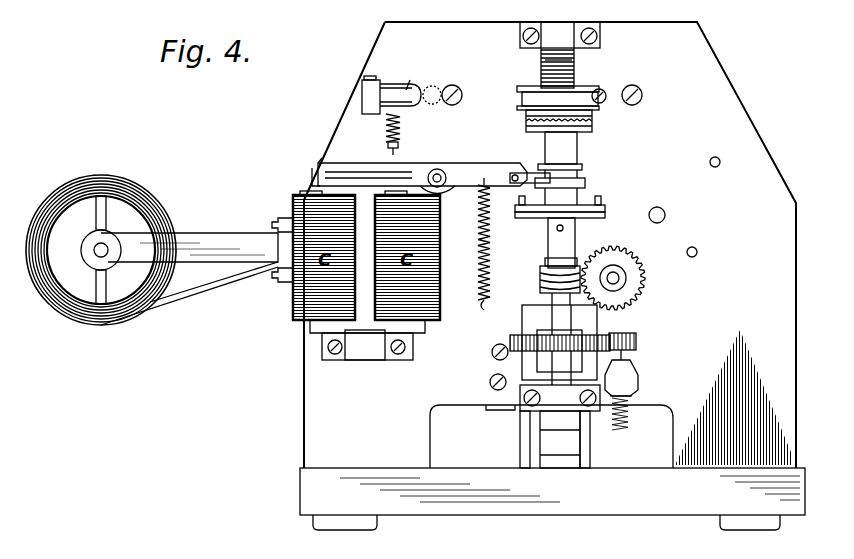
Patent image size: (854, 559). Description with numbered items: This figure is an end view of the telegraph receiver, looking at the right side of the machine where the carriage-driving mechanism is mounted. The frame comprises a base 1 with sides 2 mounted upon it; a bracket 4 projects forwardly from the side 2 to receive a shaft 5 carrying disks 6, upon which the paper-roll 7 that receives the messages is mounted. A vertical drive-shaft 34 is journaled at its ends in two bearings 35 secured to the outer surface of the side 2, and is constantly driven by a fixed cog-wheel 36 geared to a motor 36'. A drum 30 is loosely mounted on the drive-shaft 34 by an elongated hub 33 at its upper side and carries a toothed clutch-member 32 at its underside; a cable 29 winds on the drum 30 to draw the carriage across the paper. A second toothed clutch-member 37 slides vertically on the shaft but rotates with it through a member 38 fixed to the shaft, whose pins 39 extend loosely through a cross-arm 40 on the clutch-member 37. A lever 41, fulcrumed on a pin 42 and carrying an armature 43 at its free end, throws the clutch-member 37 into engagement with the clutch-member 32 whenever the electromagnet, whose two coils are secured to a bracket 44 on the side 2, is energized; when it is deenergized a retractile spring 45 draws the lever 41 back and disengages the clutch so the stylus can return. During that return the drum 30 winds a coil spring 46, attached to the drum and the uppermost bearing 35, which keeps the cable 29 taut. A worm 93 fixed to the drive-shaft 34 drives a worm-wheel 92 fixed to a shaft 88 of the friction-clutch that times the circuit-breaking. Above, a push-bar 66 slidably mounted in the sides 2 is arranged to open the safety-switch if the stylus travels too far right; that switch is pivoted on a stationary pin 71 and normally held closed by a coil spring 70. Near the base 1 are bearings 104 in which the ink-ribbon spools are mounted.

The base 1 is at (592, 518).
The sides 2 is at (304, 430).
The brackets 4 is at (212, 236).
The shaft 5 is at (92, 250).
The disks 6 is at (68, 298).
The paper-roll 7 is at (100, 326).
The cable 29 is at (604, 102).
The drum 30 is at (520, 88).
The toothed clutch-member 32 is at (526, 118).
The elongated hub 33 is at (546, 60).
The vertical drive-shaft 34 is at (576, 246).
The bearings 35 is at (560, 25).
The fixed cog-wheel 36 is at (535, 349).
The motor 36' is at (644, 381).
The toothed clutch-member 37 is at (584, 130).
The member 38 is at (538, 219).
The pins 39 is at (606, 208).
The cross-arm 40 is at (590, 190).
The lever 41 is at (478, 160).
The pin 42 is at (437, 169).
The armature 43 is at (312, 178).
The bracket 44 is at (368, 358).
The retractile spring 45 is at (478, 255).
The coil spring 46 is at (576, 60).
The push-bar 66 is at (432, 86).
The coil spring 70 is at (386, 128).
The stationary pin 71 is at (362, 155).
The shaft 88 is at (638, 288).
The worm-wheel 92 is at (645, 276).
The worm 93 is at (540, 288).
The bearings 104 is at (548, 470).